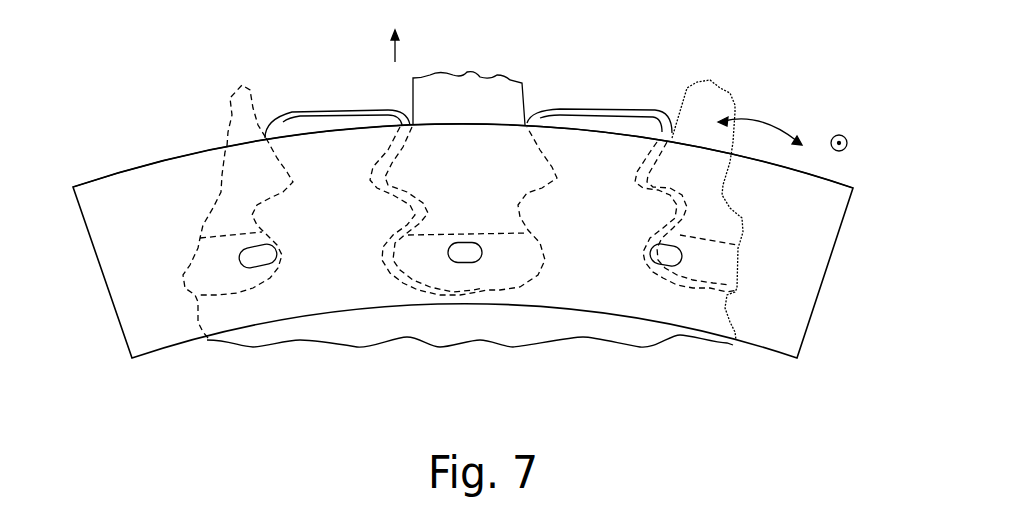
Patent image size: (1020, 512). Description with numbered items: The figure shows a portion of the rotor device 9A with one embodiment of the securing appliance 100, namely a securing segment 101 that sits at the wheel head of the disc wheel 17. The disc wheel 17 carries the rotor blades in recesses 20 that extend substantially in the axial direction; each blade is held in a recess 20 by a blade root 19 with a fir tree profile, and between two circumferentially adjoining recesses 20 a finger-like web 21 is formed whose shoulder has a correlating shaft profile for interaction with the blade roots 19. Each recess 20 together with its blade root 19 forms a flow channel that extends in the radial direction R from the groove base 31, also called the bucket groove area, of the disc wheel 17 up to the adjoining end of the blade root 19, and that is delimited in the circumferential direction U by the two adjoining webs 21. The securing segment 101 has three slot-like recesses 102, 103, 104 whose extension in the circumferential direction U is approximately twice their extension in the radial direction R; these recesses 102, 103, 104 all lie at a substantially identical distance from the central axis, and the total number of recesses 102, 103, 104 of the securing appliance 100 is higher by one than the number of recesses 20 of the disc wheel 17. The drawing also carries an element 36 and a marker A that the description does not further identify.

The rotor device 9A is at (85, 158).
The securing segment 101 is at (138, 187).
The securing appliance 100 is at (195, 150).
The blade root 19 is at (243, 87).
The recess of the disc wheel 20 is at (428, 233).
The groove base 31 is at (478, 295).
The finger-like web 21 is at (297, 127).
The retaining bar inner edge 36 is at (347, 117).
The slot-like recess 102 is at (250, 258).
The slot-like recess 103 is at (447, 257).
The slot-like recess 104 is at (648, 268).
The disc wheel 17 is at (298, 347).
The radial direction R is at (395, 53).
The circumferential direction U is at (765, 122).
The axis A is at (847, 137).